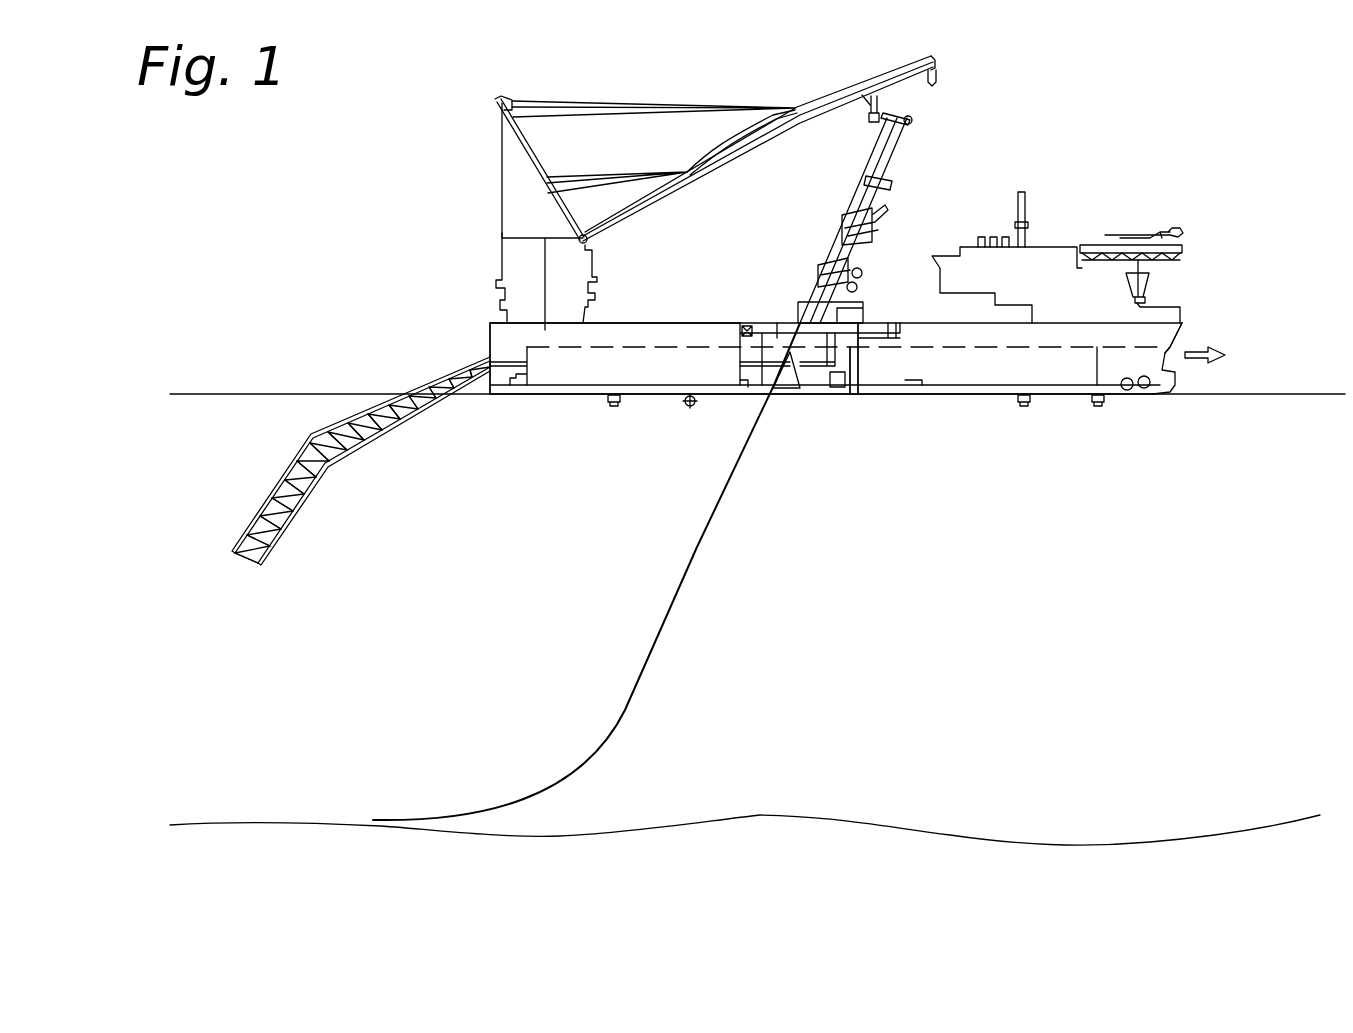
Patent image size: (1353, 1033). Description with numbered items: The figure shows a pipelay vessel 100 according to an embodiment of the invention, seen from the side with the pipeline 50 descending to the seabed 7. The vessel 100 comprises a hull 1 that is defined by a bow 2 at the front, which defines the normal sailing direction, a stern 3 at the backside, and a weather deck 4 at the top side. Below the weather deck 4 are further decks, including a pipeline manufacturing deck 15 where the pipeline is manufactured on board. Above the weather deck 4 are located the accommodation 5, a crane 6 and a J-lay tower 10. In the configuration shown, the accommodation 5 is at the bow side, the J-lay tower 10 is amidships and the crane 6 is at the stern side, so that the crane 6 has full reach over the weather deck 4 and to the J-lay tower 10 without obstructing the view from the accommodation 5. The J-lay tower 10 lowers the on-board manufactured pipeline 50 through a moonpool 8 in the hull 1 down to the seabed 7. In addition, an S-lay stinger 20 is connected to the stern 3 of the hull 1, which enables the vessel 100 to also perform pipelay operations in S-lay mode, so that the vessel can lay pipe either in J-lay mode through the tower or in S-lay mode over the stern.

The pipelay vessel 100 is at (1136, 162).
The hull 1 is at (957, 355).
The bow 2 is at (1182, 323).
The stern 3 is at (490, 347).
The weather deck 4 is at (678, 322).
The accommodation 5 is at (1060, 288).
The crane 6 is at (515, 273).
The seabed 7 is at (1080, 867).
The moonpool 8 is at (857, 372).
The J-lay tower 10 is at (880, 168).
The pipeline manufacturing deck 15 is at (1097, 347).
The S-lay stinger 20 is at (330, 431).
The pipeline 50 is at (697, 548).